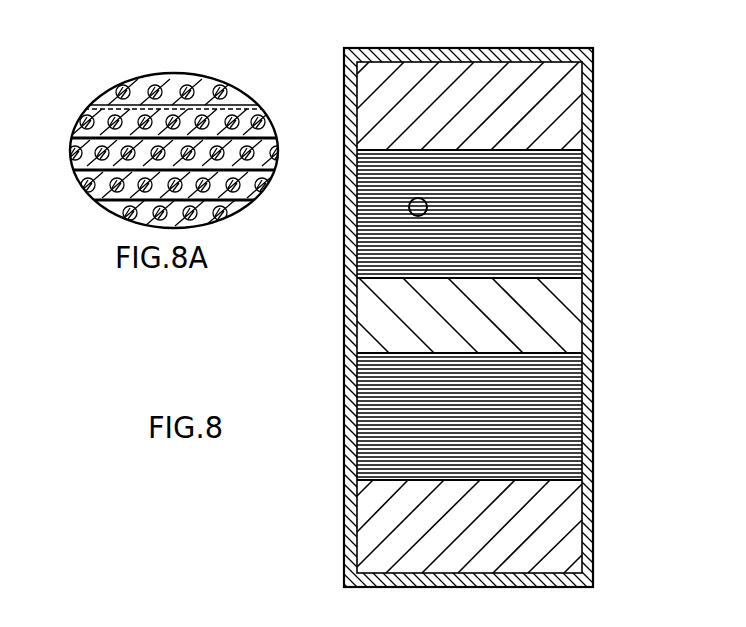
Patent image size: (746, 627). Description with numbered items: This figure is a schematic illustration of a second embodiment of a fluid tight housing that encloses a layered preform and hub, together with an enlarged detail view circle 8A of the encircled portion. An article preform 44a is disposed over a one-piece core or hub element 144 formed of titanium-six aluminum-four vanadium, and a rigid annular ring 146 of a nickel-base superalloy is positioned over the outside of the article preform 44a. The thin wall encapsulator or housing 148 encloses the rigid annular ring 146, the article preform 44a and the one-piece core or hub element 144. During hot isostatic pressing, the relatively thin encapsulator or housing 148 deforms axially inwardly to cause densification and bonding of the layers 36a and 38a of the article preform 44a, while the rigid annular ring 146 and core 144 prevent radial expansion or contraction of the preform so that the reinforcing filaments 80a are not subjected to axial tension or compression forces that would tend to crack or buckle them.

In FIG. 8, the rigid annular ring 146 is at (572, 123).
In FIG. 8, the article preform 44a is at (573, 219).
In FIG. 8, the one-piece core or hub element 144 is at (572, 310).
In FIG. 8, the thin wall encapsulator or housing 148 is at (587, 412).
In FIG. 8, the detail view circle 8A is at (409, 205).
In FIG. 8A, the reinforcing filaments 80a is at (252, 103).
In FIG. 8A, the layer 38a is at (96, 106).
In FIG. 8A, the layer 36a is at (96, 200).